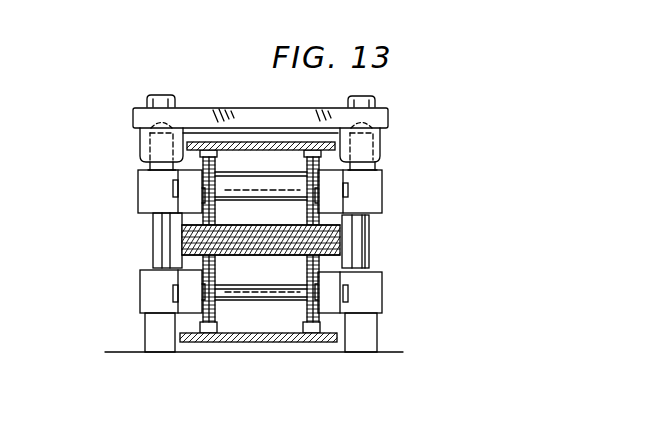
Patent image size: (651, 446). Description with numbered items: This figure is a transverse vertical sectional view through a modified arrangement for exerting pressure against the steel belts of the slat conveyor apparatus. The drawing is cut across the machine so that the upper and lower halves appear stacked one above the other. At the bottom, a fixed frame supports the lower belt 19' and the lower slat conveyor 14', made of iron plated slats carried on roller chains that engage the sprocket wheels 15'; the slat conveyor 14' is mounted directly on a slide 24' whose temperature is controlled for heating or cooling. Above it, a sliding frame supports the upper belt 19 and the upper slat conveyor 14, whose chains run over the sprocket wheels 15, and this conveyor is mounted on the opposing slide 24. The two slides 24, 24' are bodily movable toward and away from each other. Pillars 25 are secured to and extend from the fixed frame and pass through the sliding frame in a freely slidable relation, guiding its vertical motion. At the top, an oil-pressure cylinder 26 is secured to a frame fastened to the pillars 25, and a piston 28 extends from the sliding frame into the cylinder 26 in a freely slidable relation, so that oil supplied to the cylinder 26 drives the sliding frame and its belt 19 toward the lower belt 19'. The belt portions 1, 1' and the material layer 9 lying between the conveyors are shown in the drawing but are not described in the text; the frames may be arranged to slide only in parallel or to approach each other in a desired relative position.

The upper run of conveyor belt 1 is at (296, 225).
The lower run of conveyor belt 1' is at (299, 277).
The conveyor belt 9 is at (342, 240).
The slat conveyor 14 is at (261, 185).
The slat conveyor 14' is at (261, 300).
The sprocket wheel 15 is at (374, 180).
The sprocket wheel 15' is at (146, 291).
The belt 19 is at (261, 117).
The belt 19' is at (258, 363).
The slide 24 is at (143, 192).
The slide 24' is at (232, 312).
The pillar 25 is at (158, 243).
The oil-pressure cylinder 26 is at (146, 141).
The piston 28 is at (146, 165).